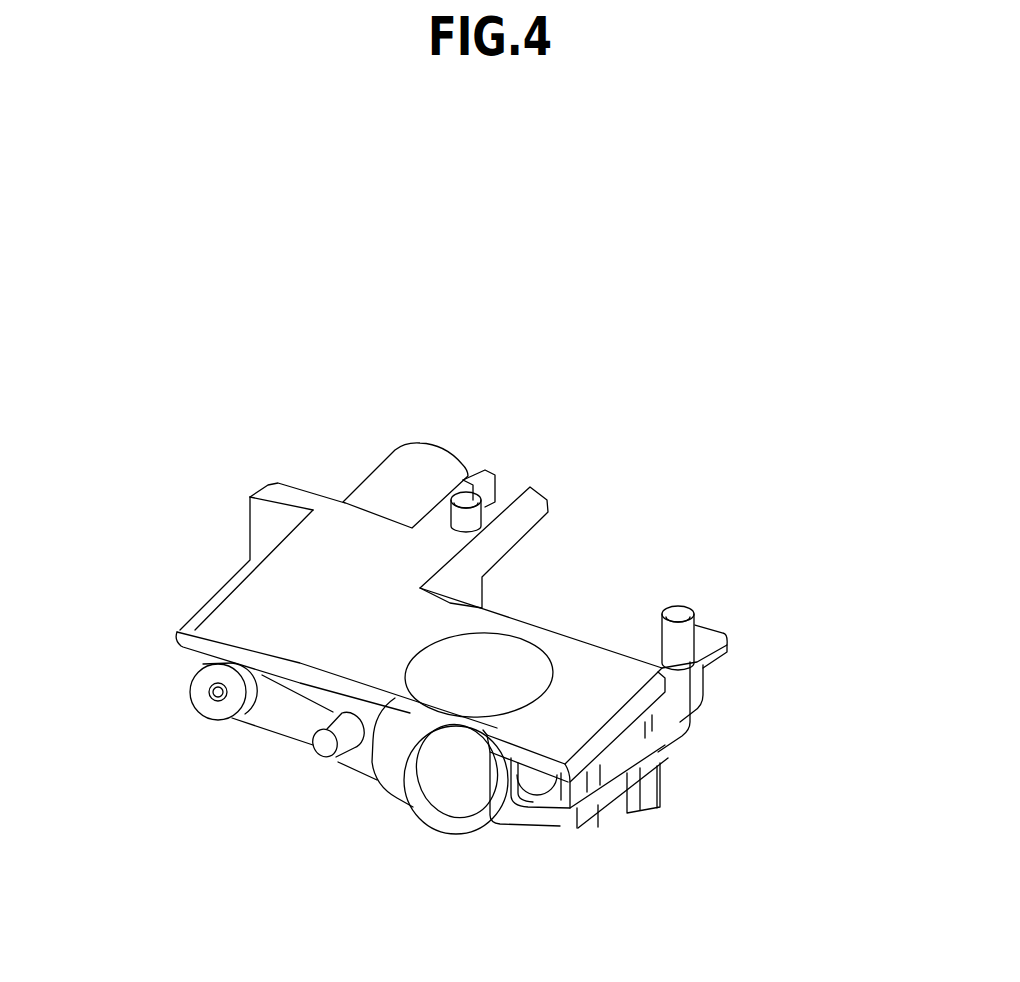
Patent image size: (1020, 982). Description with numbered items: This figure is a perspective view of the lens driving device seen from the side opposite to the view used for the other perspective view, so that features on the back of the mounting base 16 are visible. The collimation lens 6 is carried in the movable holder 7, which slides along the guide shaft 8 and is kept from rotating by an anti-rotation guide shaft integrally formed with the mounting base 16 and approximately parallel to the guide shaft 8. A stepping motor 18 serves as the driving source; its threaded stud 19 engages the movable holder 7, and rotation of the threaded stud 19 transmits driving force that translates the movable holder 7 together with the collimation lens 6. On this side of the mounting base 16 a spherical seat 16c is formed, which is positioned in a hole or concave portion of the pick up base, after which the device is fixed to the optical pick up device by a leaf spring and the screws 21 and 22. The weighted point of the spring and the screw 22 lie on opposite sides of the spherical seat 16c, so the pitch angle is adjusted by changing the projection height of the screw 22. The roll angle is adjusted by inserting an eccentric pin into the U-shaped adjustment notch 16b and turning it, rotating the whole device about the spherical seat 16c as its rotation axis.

The collimation lens 6 is at (472, 765).
The movable holder 7 is at (394, 785).
The guide shaft 8 is at (320, 754).
The mounting base 16 is at (313, 555).
The U-shaped adjustment notch 16b is at (507, 485).
The spherical seat 16c is at (490, 655).
The stepping motor 18 is at (403, 467).
The threaded stud 19 is at (203, 698).
The screw 21 is at (695, 612).
The screw 22 is at (475, 480).